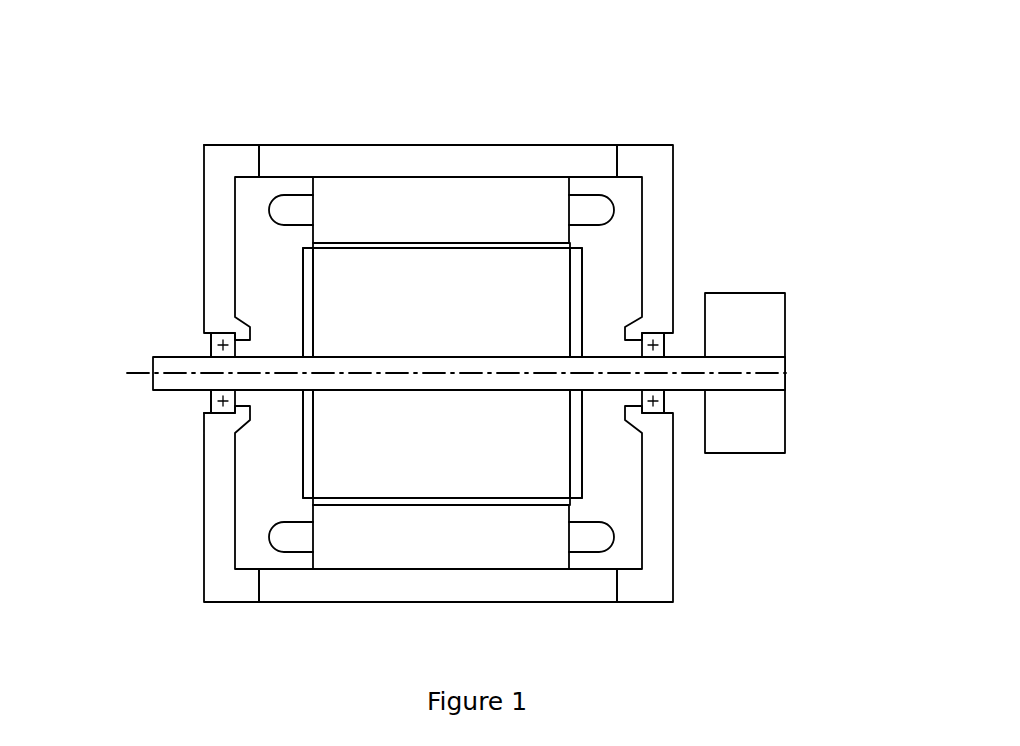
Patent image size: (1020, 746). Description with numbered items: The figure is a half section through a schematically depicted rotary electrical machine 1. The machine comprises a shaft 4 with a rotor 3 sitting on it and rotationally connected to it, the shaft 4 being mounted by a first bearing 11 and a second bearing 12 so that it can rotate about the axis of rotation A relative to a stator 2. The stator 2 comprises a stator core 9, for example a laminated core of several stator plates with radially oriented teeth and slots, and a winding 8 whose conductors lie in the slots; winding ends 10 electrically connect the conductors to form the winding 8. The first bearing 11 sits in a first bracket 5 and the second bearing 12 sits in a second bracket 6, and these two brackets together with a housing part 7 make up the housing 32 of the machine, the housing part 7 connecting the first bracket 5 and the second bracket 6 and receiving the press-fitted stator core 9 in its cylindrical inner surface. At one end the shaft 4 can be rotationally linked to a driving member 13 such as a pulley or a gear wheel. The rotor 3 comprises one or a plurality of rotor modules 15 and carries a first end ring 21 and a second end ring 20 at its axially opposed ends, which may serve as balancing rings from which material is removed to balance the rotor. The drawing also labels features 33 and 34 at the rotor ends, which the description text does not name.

The rotary electrical machine 1 is at (152, 107).
The stator 2 is at (541, 412).
The rotor 3 is at (263, 500).
The shaft 4 is at (180, 384).
The first bracket 5 is at (208, 283).
The second bracket 6 is at (655, 170).
The housing part 7 is at (540, 170).
The winding 8 is at (616, 213).
The stator core 9 is at (375, 558).
The winding ends 10 is at (585, 540).
The first bearing 11 is at (205, 347).
The second bearing 12 is at (656, 403).
The driving member 13 is at (772, 408).
The rotor module 15 is at (475, 276).
The second end ring 20 is at (577, 305).
The first end ring 21 is at (307, 297).
The housing 32 is at (159, 366).
The end ring 33 is at (573, 295).
The end ring 34 is at (310, 262).
The axis of rotation A is at (788, 373).